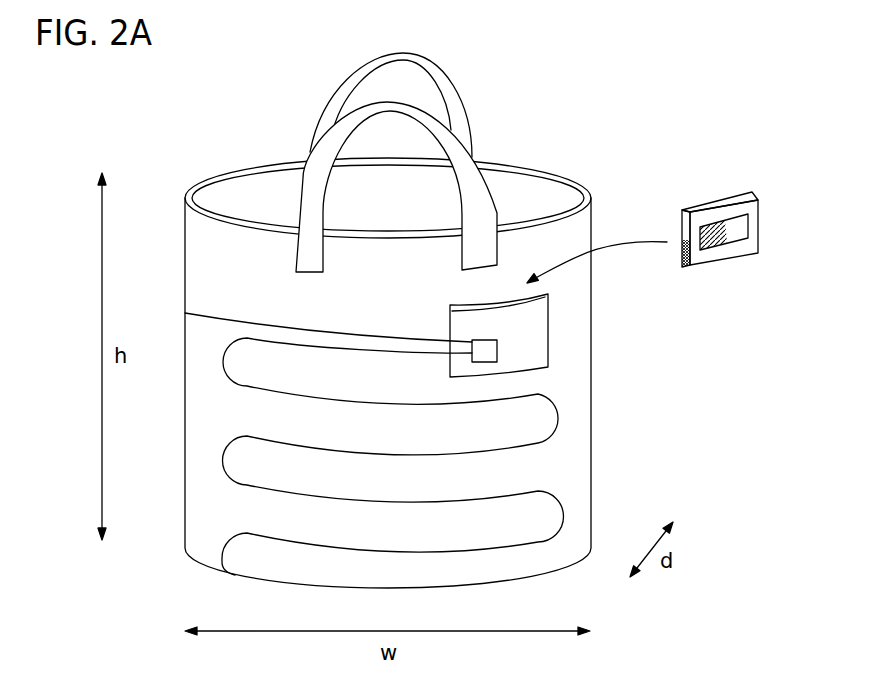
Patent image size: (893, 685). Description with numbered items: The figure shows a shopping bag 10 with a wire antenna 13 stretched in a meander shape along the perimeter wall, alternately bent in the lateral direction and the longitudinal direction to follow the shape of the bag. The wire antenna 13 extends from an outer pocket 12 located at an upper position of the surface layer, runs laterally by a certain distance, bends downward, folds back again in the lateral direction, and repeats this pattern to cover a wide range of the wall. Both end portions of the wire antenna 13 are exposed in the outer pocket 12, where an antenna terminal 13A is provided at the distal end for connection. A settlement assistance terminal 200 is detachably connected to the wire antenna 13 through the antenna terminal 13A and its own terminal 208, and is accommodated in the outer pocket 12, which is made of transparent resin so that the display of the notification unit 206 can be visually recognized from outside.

The shopping bag 10 is at (556, 102).
The outer pocket 12 is at (538, 318).
The wire antenna 13 is at (222, 460).
The antenna terminal 13A is at (497, 350).
The settlement assistance terminal 200 is at (678, 233).
The notification unit 206 is at (737, 230).
The terminal 208 is at (690, 257).